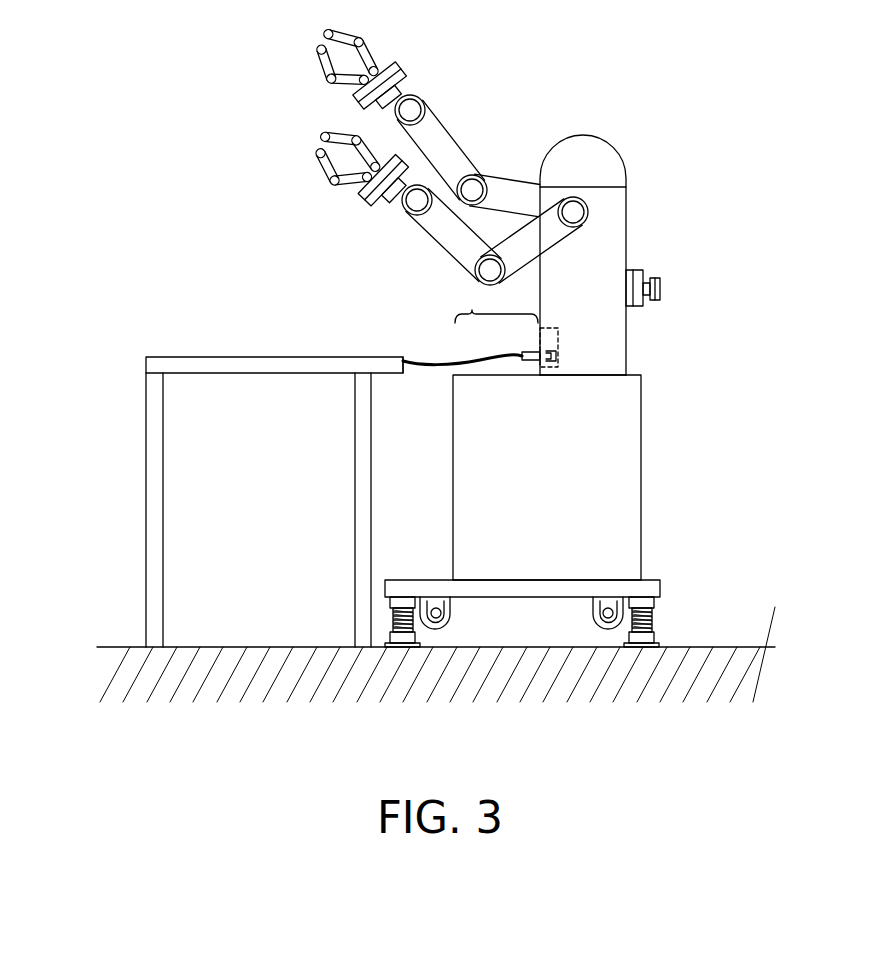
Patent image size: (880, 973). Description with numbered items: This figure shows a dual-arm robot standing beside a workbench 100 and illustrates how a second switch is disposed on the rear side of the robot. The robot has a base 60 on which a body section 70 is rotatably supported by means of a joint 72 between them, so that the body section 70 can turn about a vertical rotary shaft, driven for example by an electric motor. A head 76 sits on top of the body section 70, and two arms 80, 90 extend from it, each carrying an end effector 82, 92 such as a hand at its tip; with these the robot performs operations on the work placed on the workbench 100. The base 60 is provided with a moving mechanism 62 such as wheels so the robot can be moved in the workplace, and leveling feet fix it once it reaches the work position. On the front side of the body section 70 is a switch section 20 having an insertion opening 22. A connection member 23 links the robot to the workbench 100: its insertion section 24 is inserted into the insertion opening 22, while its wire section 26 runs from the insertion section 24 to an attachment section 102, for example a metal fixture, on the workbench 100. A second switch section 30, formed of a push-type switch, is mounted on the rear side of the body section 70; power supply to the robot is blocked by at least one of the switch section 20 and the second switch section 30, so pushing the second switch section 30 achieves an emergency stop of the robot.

The switch section 20 is at (556, 328).
The insertion opening 22 is at (558, 352).
The connection member 23 is at (496, 303).
The insertion section 24 is at (525, 354).
The wire section 26 is at (479, 357).
The second switch section 30 is at (636, 270).
The base 60 is at (645, 480).
The moving mechanism 62 is at (680, 618).
The body section 70 is at (628, 203).
The joint 72 is at (622, 372).
The head 76 is at (580, 135).
The arm 80 is at (445, 242).
The end effector 82 is at (366, 204).
The arm 90 is at (450, 143).
The end effector 92 is at (393, 63).
The workbench 100 is at (241, 356).
The attachment section 102 is at (406, 356).